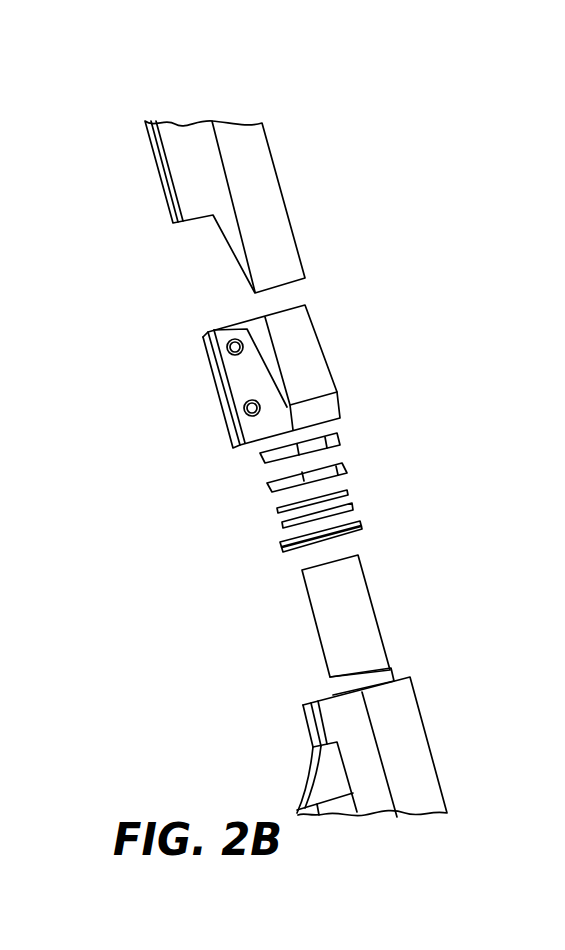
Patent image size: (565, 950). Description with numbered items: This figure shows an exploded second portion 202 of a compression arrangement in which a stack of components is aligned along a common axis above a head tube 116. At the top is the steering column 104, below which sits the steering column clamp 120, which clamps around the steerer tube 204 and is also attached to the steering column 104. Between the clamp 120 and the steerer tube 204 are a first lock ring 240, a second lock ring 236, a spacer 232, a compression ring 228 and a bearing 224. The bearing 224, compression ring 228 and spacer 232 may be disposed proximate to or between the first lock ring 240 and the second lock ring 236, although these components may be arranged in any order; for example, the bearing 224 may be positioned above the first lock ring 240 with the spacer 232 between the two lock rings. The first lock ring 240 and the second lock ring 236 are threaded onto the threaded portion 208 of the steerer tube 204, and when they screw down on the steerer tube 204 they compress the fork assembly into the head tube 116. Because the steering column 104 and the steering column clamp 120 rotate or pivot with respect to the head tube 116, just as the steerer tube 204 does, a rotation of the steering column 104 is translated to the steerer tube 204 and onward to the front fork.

The exploded tip assembly 202 is at (443, 90).
The steering column 104 is at (287, 260).
The steering column clamp 120 is at (313, 360).
The first lock ring 240 is at (340, 435).
The second lock ring 236 is at (350, 465).
The spacer 232 is at (278, 507).
The compression ring 228 is at (352, 506).
The bearing 224 is at (362, 525).
The steerer tube 204 is at (373, 605).
The threaded portion 208 is at (387, 672).
The head tube 116 is at (430, 775).